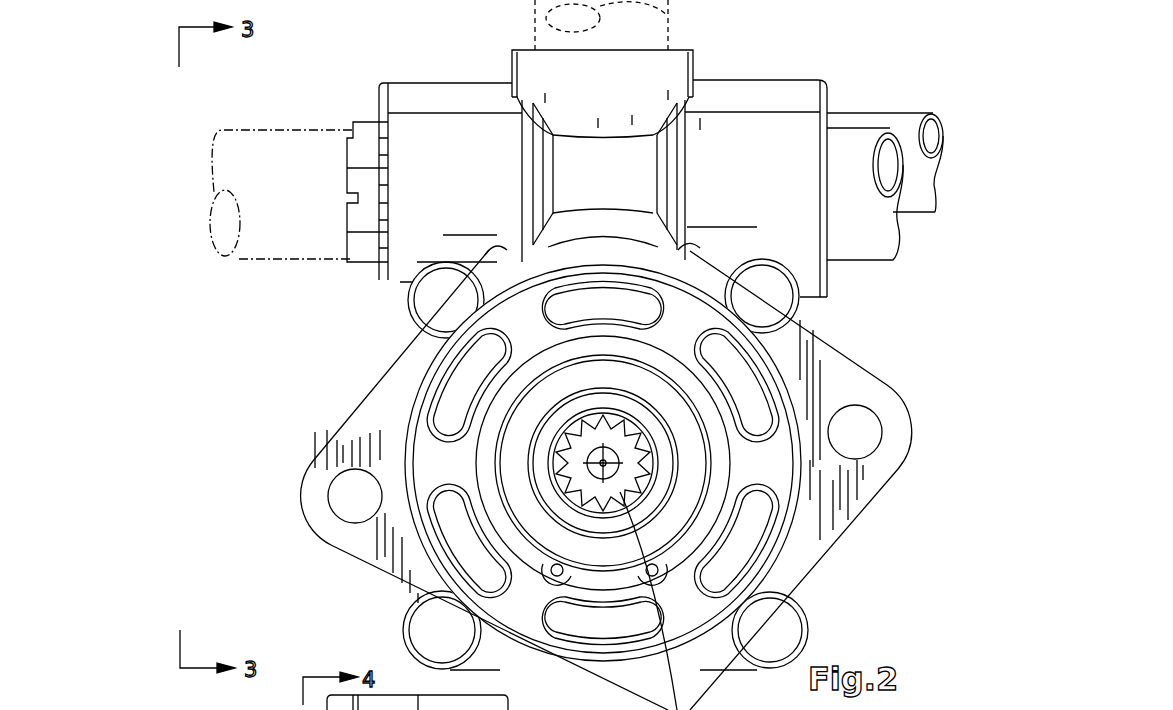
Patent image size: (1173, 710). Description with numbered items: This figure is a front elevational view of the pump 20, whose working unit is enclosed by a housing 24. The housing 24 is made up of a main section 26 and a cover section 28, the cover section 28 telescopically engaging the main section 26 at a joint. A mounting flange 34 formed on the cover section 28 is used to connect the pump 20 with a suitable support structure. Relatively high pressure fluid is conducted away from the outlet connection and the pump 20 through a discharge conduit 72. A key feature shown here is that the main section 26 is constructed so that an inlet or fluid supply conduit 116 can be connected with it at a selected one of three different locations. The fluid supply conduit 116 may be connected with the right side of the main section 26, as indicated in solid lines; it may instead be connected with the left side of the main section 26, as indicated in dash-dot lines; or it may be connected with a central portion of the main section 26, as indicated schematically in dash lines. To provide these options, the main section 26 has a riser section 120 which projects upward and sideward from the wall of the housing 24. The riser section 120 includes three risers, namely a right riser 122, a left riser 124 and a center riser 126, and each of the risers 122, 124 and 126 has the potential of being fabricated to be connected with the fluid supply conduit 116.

The pump 20 is at (790, 38).
The housing 24 is at (810, 72).
The main section 26 is at (432, 80).
The cover section 28 is at (333, 550).
The mounting flange 34 is at (870, 473).
The discharge conduit 72 is at (907, 123).
The fluid supply conduit 116 is at (258, 130).
The riser section 120 is at (710, 110).
The right riser 122 is at (792, 163).
The left riser 124 is at (403, 260).
The center riser 126 is at (540, 68).